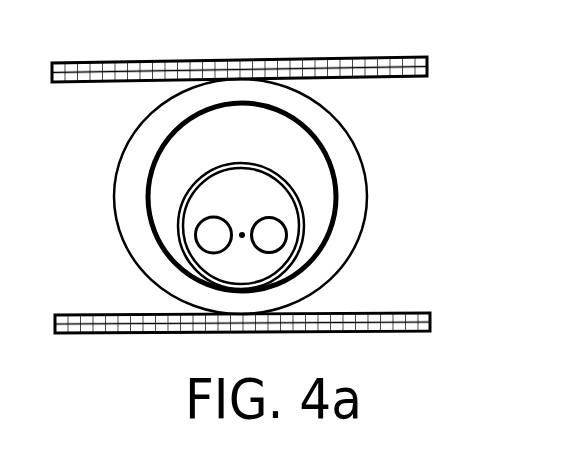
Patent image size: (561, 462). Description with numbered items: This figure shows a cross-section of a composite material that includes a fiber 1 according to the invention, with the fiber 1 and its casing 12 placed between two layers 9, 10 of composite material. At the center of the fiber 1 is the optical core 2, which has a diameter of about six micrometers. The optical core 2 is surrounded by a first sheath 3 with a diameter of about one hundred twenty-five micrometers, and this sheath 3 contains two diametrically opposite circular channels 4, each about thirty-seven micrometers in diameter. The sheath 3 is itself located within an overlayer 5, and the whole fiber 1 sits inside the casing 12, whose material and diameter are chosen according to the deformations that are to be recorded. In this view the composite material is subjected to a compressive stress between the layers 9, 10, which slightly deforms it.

The fiber 1 is at (246, 246).
The optical core 2 is at (242, 235).
The first sheath 3 is at (275, 259).
The circular channels 4 is at (277, 234).
The overlayer 5 is at (198, 192).
The layer of composite material 9 is at (427, 63).
The layer of composite material 10 is at (430, 318).
The casing 12 is at (350, 190).